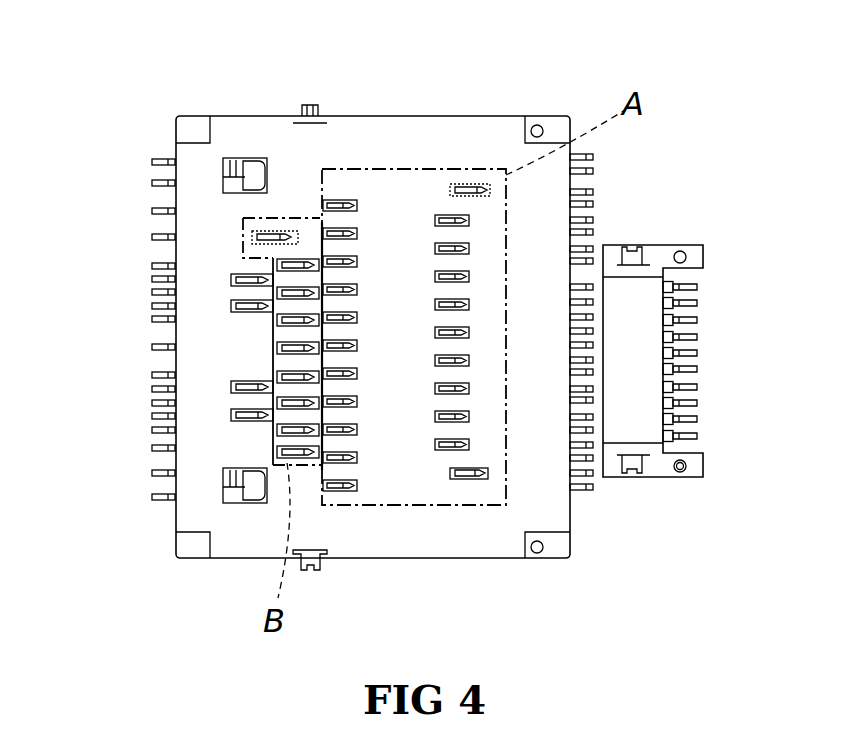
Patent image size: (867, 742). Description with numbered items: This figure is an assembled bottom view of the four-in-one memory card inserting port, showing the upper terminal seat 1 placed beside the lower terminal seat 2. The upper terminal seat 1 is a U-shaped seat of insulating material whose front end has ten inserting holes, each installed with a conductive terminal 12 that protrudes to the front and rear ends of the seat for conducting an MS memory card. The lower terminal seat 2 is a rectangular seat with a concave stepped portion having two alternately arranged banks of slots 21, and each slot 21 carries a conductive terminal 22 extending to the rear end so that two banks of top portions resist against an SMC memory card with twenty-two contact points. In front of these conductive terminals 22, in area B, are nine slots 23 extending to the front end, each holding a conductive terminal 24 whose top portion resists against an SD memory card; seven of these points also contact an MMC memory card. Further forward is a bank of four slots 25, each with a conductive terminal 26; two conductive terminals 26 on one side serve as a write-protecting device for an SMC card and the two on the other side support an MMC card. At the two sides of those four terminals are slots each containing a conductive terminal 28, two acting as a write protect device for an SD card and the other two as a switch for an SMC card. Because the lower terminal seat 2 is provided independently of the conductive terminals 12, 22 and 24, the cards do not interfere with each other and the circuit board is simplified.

The upper terminal seat 1 is at (663, 245).
The lower terminal seat 2 is at (371, 116).
The conductive terminal 12 is at (692, 337).
The slot 21 is at (453, 190).
The conductive terminal 22 is at (481, 188).
The slot 23 is at (293, 237).
The conductive terminal 24 is at (276, 236).
The slot 25 is at (262, 312).
The conductive terminal 26 is at (234, 281).
The conductive terminal 28 is at (250, 182).